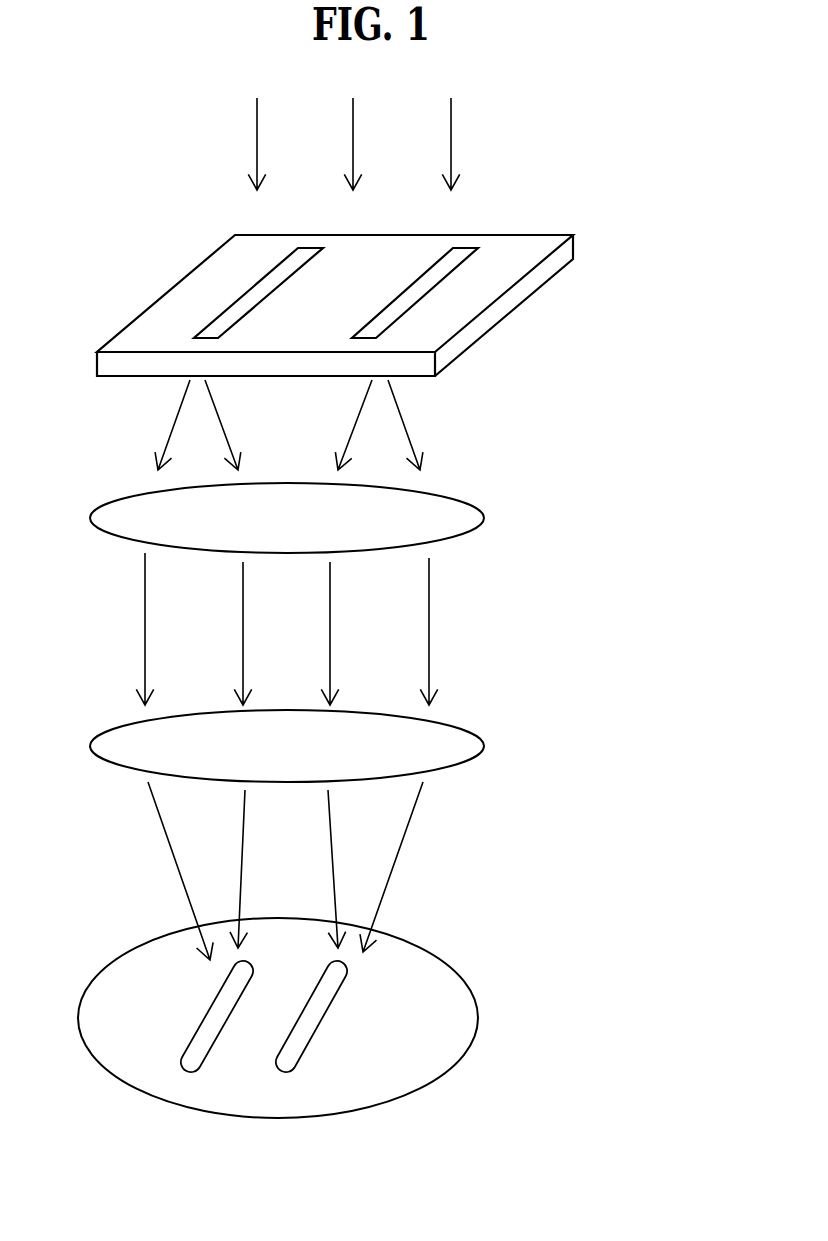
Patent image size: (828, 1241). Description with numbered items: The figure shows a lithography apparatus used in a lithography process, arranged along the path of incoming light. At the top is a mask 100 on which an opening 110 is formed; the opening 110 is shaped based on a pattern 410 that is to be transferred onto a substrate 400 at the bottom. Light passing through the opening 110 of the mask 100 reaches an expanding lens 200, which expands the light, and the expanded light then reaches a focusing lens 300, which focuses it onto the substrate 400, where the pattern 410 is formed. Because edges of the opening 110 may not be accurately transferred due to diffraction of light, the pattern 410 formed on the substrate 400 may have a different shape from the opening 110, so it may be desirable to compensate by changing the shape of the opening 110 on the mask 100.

The mask 100 is at (565, 253).
The opening 110 is at (435, 287).
The expanding lens 200 is at (460, 515).
The focusing lens 300 is at (467, 748).
The substrate 400 is at (458, 1012).
The pattern 410 is at (323, 1018).